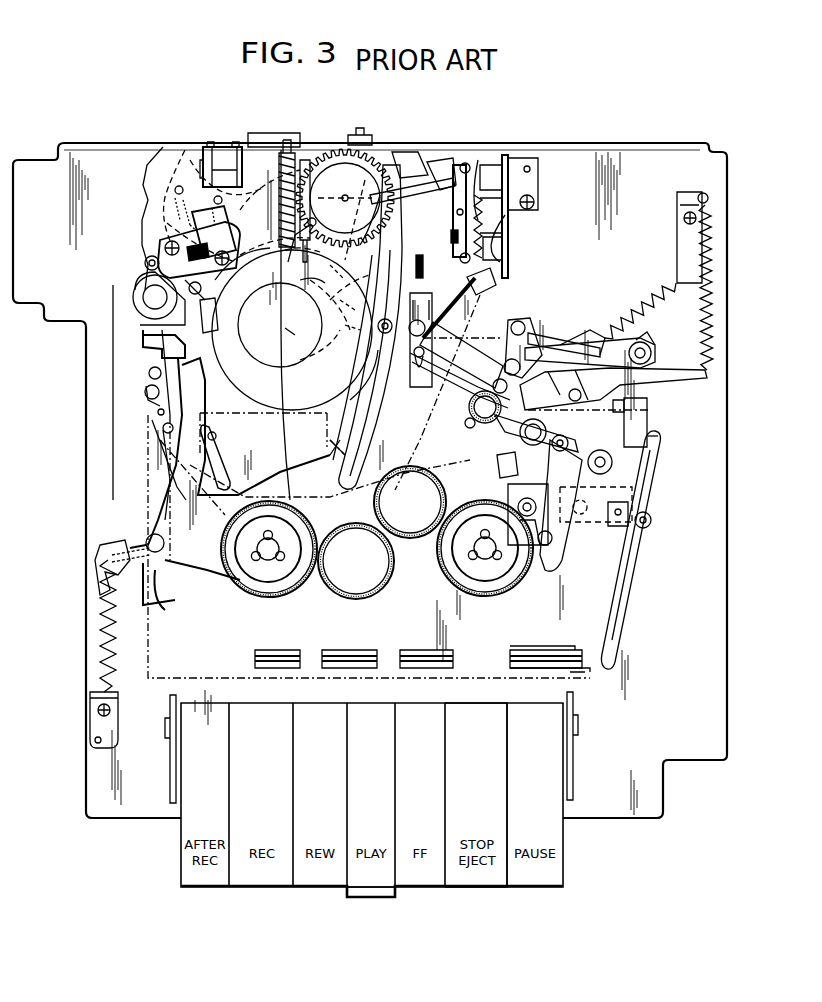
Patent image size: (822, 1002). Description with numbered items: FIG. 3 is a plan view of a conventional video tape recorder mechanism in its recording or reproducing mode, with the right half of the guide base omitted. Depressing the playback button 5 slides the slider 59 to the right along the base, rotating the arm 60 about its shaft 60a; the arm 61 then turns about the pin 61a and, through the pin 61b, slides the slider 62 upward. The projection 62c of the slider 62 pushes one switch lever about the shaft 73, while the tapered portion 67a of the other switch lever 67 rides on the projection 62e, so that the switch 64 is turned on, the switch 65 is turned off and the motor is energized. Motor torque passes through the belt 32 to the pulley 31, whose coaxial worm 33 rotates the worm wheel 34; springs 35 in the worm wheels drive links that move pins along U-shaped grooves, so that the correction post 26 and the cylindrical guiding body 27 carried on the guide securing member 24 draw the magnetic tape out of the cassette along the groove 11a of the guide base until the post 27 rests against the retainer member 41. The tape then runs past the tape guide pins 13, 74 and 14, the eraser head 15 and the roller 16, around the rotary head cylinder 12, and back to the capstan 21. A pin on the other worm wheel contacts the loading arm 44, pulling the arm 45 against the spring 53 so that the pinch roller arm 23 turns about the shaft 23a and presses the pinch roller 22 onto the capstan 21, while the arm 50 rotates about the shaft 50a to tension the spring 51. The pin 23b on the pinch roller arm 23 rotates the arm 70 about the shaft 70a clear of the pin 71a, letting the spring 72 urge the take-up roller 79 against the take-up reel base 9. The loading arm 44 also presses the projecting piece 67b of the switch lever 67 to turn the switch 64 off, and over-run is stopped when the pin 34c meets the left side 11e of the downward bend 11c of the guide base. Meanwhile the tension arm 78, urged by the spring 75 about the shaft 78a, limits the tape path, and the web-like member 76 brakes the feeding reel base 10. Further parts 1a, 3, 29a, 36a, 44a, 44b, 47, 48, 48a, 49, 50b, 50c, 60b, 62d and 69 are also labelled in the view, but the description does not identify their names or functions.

The chassis slot 1a is at (630, 418).
The stop/eject button 3 is at (480, 882).
The playback button 5 is at (365, 890).
The take-up reel base 9 is at (465, 508).
The feeding reel base 10 is at (282, 512).
The groove 11a is at (210, 438).
The downward bend 11c is at (224, 147).
The left side of downward bend 11e is at (206, 180).
The rotary head cylinder 12 is at (245, 378).
The tape guide pin 13 is at (152, 418).
The tape guide pin 14 is at (149, 372).
The eraser head 15 is at (180, 342).
The roller 16 is at (150, 280).
The capstan 21 is at (462, 430).
The pinch roller 22 is at (480, 423).
The pinch roller arm 23 is at (514, 438).
The shaft 23a is at (496, 465).
The pin 23b is at (572, 443).
The guide securing member 24 is at (266, 325).
The correction post 26 is at (214, 286).
The cylindrical guiding body 27 is at (216, 314).
The stop pin 29a is at (358, 128).
The pulley 31 is at (281, 140).
The belt 32 is at (328, 143).
The worm 33 is at (278, 203).
The worm wheel 34 is at (170, 158).
The pin 34c is at (206, 148).
The spring 35 is at (140, 183).
The cam surface 36a is at (298, 262).
The retainer member 41 is at (222, 234).
The loading arm 44 is at (480, 292).
The lever end 44a is at (495, 283).
The lever arm 44b is at (368, 190).
The arm 45 is at (456, 351).
The connecting rod 47 is at (470, 380).
The bell crank 48 is at (523, 338).
The bell crank arm 48a is at (564, 329).
The pivot pin 49 is at (516, 386).
The arm 50 is at (613, 389).
The shaft 50a is at (582, 393).
The lever tab 50b is at (628, 405).
The spring hook 50c is at (572, 335).
The spring 51 is at (712, 315).
The spring 53 is at (630, 305).
The slider 59 is at (565, 655).
The arm 60 is at (628, 600).
The shaft 60a is at (651, 520).
The eject lever end 60b is at (660, 440).
The arm 61 is at (655, 358).
The pin 61a is at (652, 340).
The pin 61b is at (372, 388).
The slider 62 is at (350, 356).
The projection 62c is at (413, 160).
The lever hook 62d is at (413, 350).
The projection 62e is at (306, 293).
The switch 64 is at (488, 162).
The switch 65 is at (502, 246).
The switch lever 67 is at (538, 183).
The tapered portion 67a is at (300, 332).
The projecting piece 67b is at (503, 155).
The stopper 69 is at (455, 152).
The arm 70 is at (548, 445).
The shaft 70a is at (612, 462).
The pin 71a is at (618, 526).
The spring 72 is at (560, 478).
The shaft 73 is at (490, 238).
The tape guide pin 74 is at (146, 392).
The spring 75 is at (100, 632).
The web-like member 76 is at (212, 580).
The tension arm 78 is at (160, 520).
The shaft 78a is at (148, 540).
The take-up roller 79 is at (512, 500).